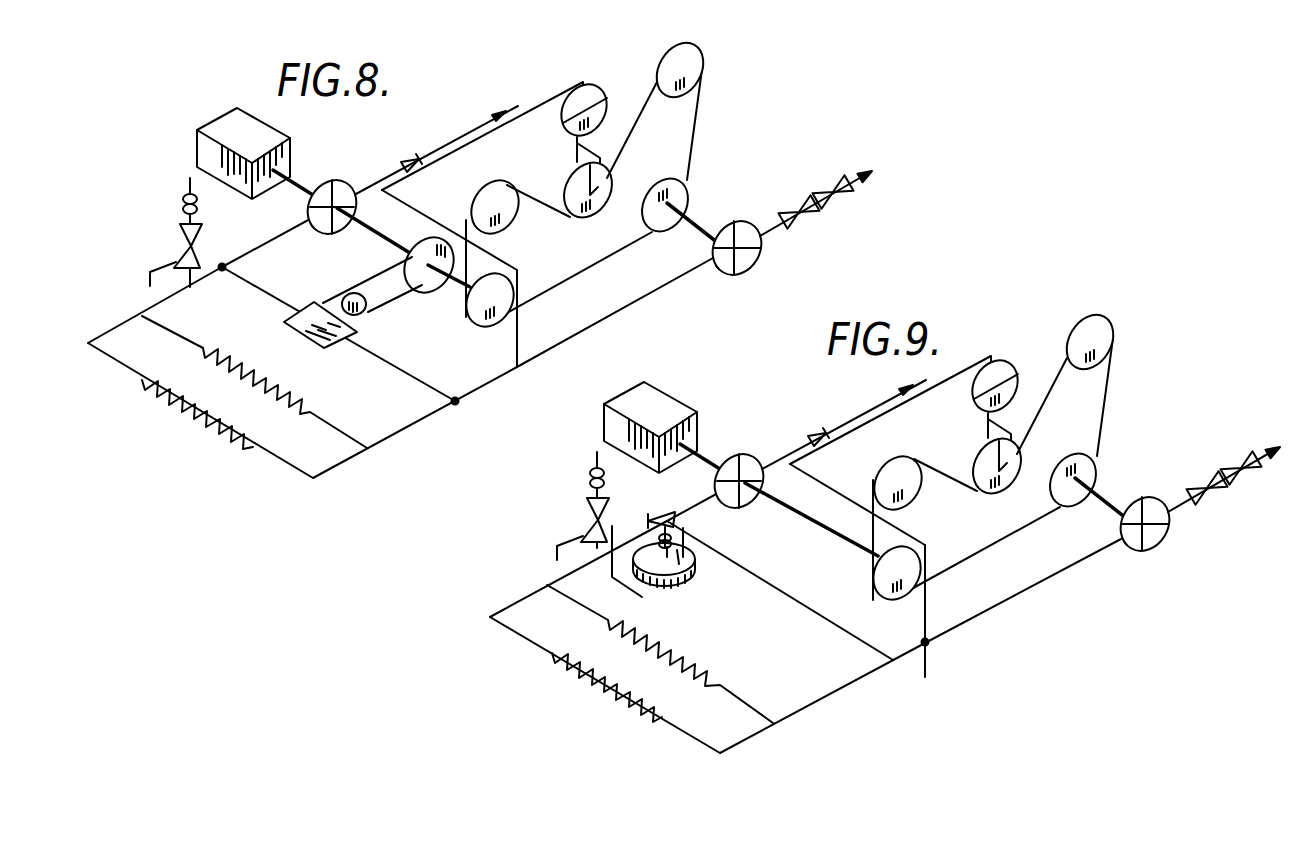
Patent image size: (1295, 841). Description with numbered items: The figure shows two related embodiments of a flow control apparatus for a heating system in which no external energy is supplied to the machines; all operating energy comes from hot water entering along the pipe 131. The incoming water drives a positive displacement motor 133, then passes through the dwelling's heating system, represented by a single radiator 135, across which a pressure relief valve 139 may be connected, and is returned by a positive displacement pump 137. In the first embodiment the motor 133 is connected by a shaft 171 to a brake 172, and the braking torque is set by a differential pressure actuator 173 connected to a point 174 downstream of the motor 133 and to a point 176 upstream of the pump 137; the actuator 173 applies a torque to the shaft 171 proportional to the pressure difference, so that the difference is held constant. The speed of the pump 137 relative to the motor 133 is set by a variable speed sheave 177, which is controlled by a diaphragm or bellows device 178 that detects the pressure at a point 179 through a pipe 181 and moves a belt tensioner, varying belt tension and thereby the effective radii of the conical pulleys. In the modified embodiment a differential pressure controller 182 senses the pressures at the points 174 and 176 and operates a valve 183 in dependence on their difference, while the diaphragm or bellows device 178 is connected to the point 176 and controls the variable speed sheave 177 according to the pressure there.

In FIG. 8, the pipe 131 is at (461, 135).
In FIG. 9, the pipe 131 is at (796, 441).
In FIG. 8, the positive displacement motor 133 is at (340, 182).
In FIG. 9, the positive displacement motor 133 is at (744, 459).
In FIG. 8, the radiator 135 is at (203, 424).
In FIG. 9, the radiator 135 is at (583, 687).
In FIG. 8, the positive displacement pump 137 is at (742, 220).
In FIG. 9, the positive displacement pump 137 is at (1145, 501).
In FIG. 8, the pressure relief valve 139 is at (300, 416).
In FIG. 9, the pressure relief valve 139 is at (667, 654).
In FIG. 8, the shaft 171 is at (378, 240).
In FIG. 8, the brake 172 is at (387, 306).
In FIG. 8, the differential pressure actuator 173 is at (305, 333).
In FIG. 8, the point 174 is at (220, 271).
In FIG. 9, the point 174 is at (636, 536).
In FIG. 8, the point 176 is at (450, 401).
In FIG. 9, the point 176 is at (962, 653).
In FIG. 8, the variable speed sheave 177 is at (700, 106).
In FIG. 9, the variable speed sheave 177 is at (1102, 381).
In FIG. 8, the diaphragm or bellows device 178 is at (578, 97).
In FIG. 9, the diaphragm or bellows device 178 is at (964, 427).
In FIG. 8, the point 179 is at (515, 366).
In FIG. 8, the pipe 181 is at (519, 323).
In FIG. 9, the differential pressure controller 182 is at (700, 585).
In FIG. 9, the valve 183 is at (707, 526).